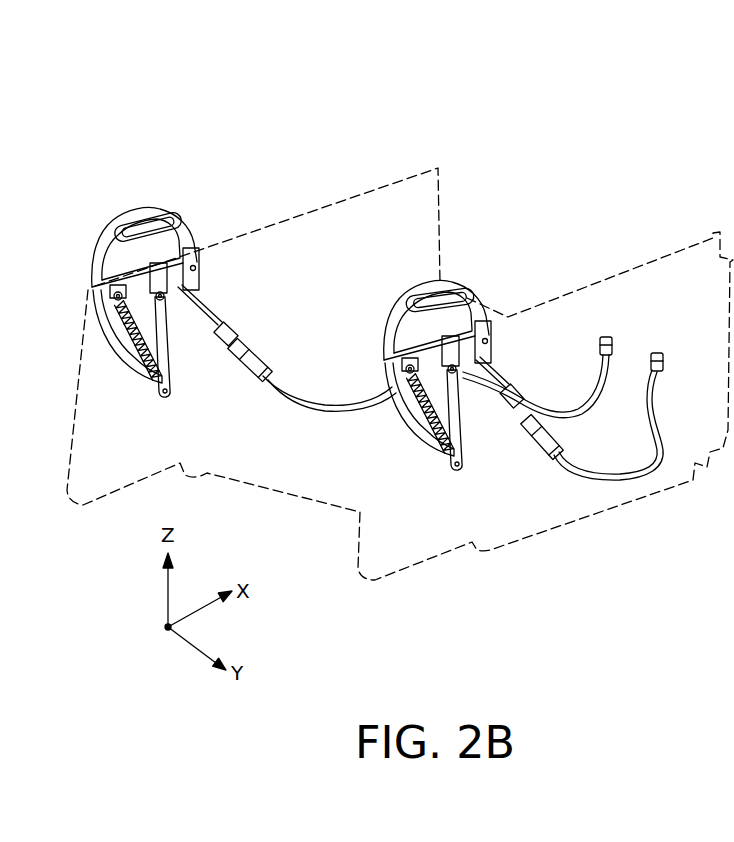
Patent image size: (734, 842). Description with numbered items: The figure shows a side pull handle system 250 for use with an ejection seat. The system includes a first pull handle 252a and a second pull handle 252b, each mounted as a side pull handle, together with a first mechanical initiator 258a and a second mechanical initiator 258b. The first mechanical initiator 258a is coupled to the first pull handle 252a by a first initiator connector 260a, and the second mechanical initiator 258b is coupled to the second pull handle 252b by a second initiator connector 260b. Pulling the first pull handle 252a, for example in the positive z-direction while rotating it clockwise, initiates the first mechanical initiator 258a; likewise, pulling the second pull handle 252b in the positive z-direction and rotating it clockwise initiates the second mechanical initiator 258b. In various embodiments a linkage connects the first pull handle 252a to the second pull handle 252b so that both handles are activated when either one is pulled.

The side pull handle system 250 is at (346, 168).
The first pull handle 252a is at (153, 262).
The second pull handle 252b is at (462, 350).
The first mechanical initiator 258a is at (243, 334).
The second mechanical initiator 258b is at (535, 400).
The first initiator connector 260a is at (187, 294).
The second initiator connector 260b is at (485, 372).